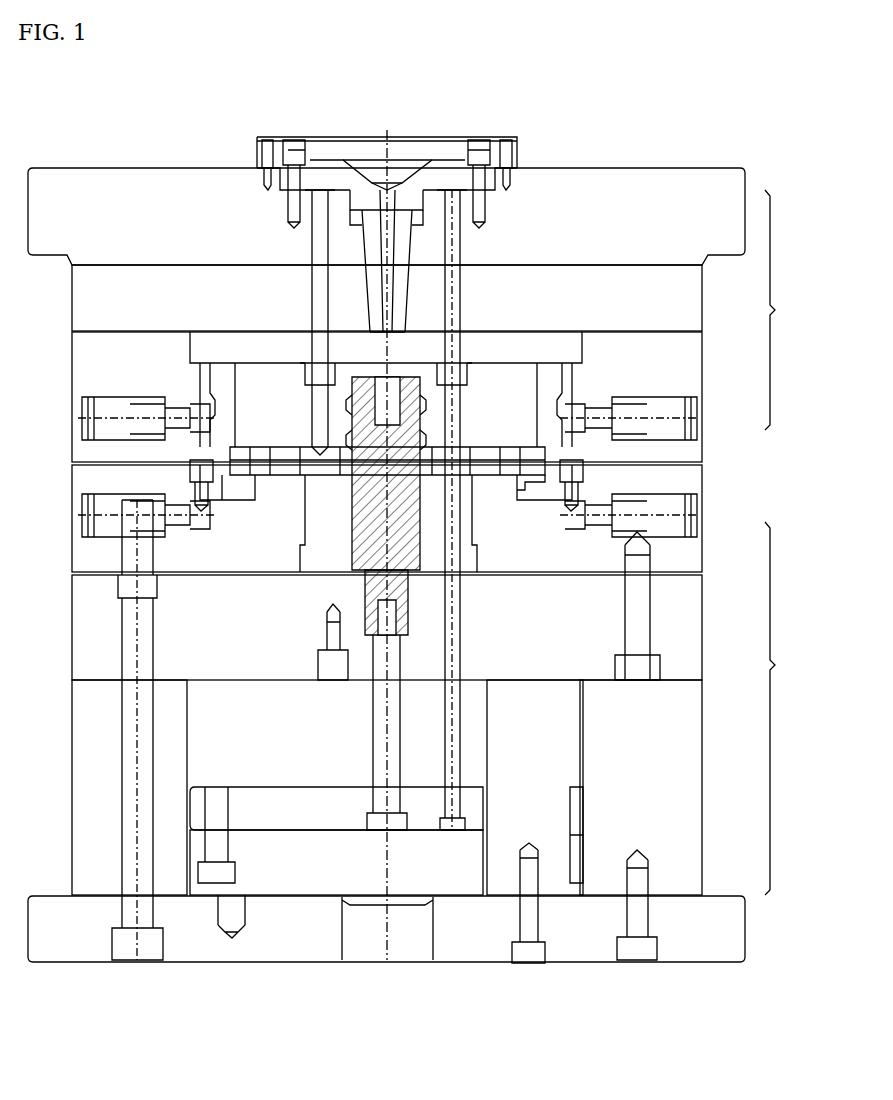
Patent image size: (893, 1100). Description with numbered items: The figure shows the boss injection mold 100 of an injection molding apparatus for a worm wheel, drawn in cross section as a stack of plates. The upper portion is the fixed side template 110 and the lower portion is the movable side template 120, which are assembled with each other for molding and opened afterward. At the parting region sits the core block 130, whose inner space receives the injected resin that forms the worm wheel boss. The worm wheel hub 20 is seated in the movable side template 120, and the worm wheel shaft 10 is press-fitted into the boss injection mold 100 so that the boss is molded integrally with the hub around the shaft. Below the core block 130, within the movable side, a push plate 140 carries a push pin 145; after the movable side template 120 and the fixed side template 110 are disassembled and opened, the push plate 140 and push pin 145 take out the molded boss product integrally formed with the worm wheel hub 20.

The boss injection mold 100 is at (727, 165).
The fixed side template 110 is at (449, 326).
The movable side template 120 is at (449, 730).
The core block 130 is at (312, 528).
The push plate 140 is at (310, 875).
The push pin 145 is at (447, 730).
The worm wheel shaft 10 is at (415, 408).
The worm wheel hub 20 is at (430, 447).